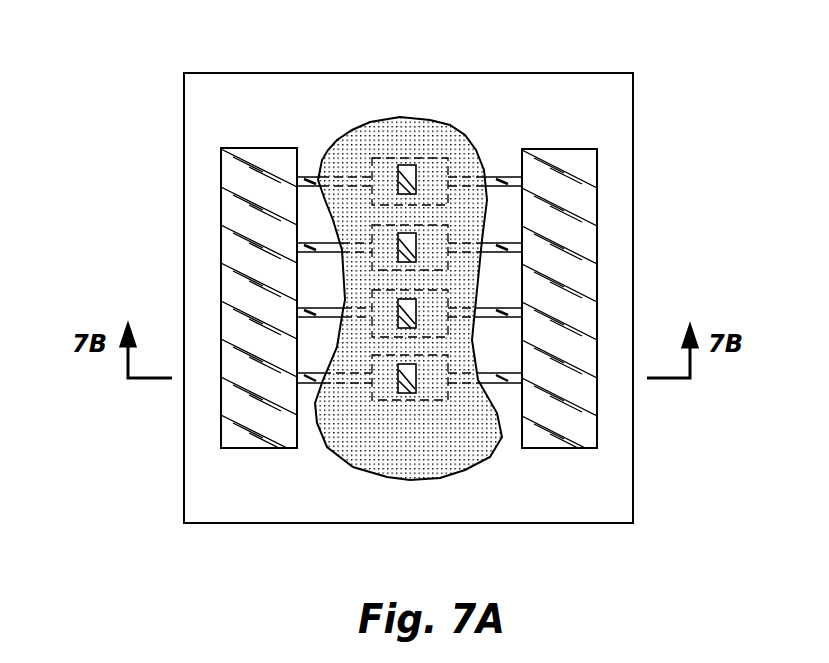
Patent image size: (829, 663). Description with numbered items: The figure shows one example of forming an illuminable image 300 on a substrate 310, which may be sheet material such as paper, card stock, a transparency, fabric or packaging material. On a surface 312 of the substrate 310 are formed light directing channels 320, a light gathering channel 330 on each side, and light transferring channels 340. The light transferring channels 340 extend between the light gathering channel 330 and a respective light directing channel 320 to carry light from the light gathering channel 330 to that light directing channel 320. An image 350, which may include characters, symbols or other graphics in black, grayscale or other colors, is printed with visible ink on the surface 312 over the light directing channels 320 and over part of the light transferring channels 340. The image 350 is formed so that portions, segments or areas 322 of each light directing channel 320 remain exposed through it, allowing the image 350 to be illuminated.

The illuminable image 300 is at (625, 50).
The substrate 310 is at (622, 143).
The surface 312 is at (579, 491).
The light directing channels 320 is at (415, 157).
The portions of light directing channel 322 is at (408, 248).
The light gathering channel 330 is at (219, 225).
The light transferring channels 340 is at (303, 250).
The image 350 is at (332, 142).